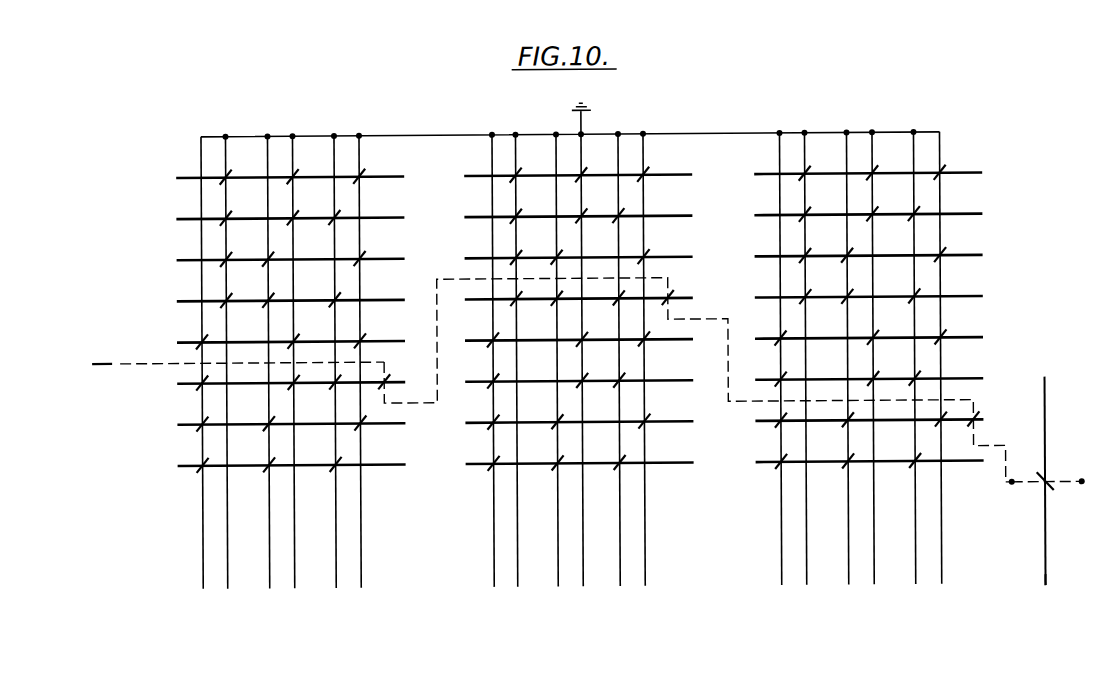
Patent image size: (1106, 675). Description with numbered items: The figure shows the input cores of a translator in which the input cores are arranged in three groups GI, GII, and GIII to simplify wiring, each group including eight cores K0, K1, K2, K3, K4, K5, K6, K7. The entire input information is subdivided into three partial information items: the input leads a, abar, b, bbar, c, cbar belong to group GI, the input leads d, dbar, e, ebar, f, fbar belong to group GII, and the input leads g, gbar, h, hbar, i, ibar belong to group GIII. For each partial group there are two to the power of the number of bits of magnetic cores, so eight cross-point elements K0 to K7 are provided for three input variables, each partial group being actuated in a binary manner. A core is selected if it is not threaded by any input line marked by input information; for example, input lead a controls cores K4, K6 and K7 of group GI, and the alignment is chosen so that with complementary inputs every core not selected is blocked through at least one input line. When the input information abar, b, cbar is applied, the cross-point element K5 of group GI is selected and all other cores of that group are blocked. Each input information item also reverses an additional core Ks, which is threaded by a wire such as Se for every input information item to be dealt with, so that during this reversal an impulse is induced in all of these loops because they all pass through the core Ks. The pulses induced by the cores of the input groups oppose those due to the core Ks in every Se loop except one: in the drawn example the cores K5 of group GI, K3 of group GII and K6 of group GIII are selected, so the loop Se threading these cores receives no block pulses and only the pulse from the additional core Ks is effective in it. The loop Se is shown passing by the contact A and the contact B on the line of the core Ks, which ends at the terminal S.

The cross-point element K0 is at (561, 176).
The cross-point element K1 is at (561, 217).
The cross-point element K2 is at (562, 258).
The cross-point element K3 is at (562, 299).
The cross-point element K4 is at (562, 340).
The cross-point element K5 is at (562, 381).
The cross-point element K6 is at (562, 422).
The cross-point element K7 is at (563, 463).
The partial core group GI is at (277, 397).
The partial core group GII is at (568, 395).
The partial core group GIII is at (859, 393).
The input lead a is at (194, 380).
The input lead abar is at (228, 598).
The input lead b is at (267, 379).
The input lead bbar is at (299, 598).
The input lead c is at (335, 379).
The input lead cbar is at (360, 379).
The input lead d is at (485, 378).
The input lead dbar is at (515, 598).
The input lead e is at (555, 377).
The input lead ebar is at (588, 598).
The input lead f is at (613, 377).
The input lead fbar is at (642, 377).
The input lead g is at (776, 376).
The input lead gbar is at (809, 598).
The input lead h is at (845, 375).
The input lead hbar is at (879, 598).
The input lead i is at (911, 375).
The input lead ibar is at (938, 375).
The wire loop Se is at (221, 363).
The core Ks is at (1042, 469).
The contact A is at (1014, 470).
The contact B is at (1083, 470).
The switch terminal S is at (1043, 593).